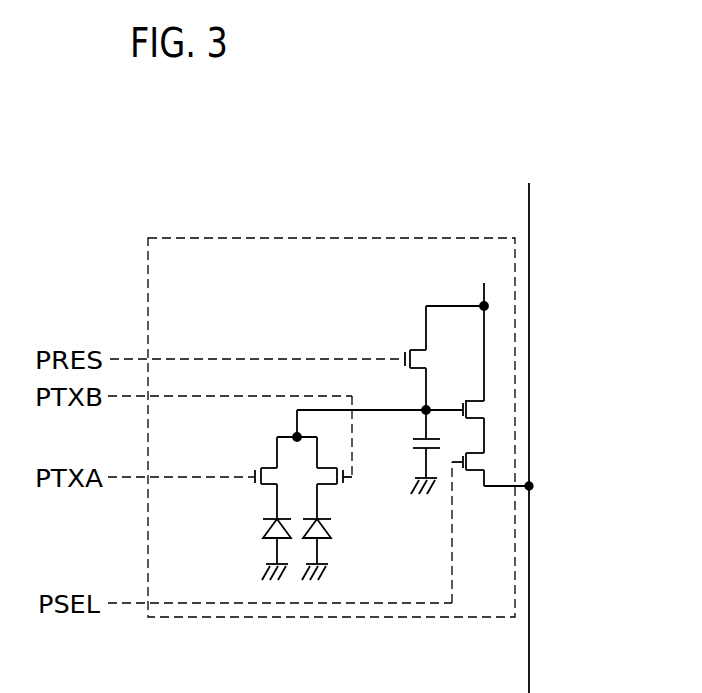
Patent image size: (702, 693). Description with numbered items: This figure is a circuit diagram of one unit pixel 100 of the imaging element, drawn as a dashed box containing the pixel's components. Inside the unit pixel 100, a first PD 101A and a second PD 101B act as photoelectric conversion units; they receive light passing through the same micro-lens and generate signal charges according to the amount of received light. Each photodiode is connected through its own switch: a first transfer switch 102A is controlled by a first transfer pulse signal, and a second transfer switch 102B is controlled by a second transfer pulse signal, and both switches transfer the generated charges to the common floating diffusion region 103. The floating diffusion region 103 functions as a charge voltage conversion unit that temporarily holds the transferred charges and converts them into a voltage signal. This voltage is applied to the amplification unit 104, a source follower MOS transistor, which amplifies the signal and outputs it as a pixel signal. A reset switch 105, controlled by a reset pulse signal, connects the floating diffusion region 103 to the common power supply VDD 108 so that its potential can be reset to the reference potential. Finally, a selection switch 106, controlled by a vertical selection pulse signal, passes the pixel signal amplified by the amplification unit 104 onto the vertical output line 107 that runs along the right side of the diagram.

The unit pixel 100 is at (186, 237).
The first PD 101A is at (263, 529).
The second PD 101B is at (327, 530).
The first transfer switch 102A is at (255, 484).
The second transfer switch 102B is at (340, 485).
The floating diffusion region 103 is at (413, 443).
The amplification unit 104 is at (486, 411).
The reset switch 105 is at (407, 351).
The selection switch 106 is at (486, 460).
The vertical output line 107 is at (530, 527).
The VDD 108 is at (500, 276).